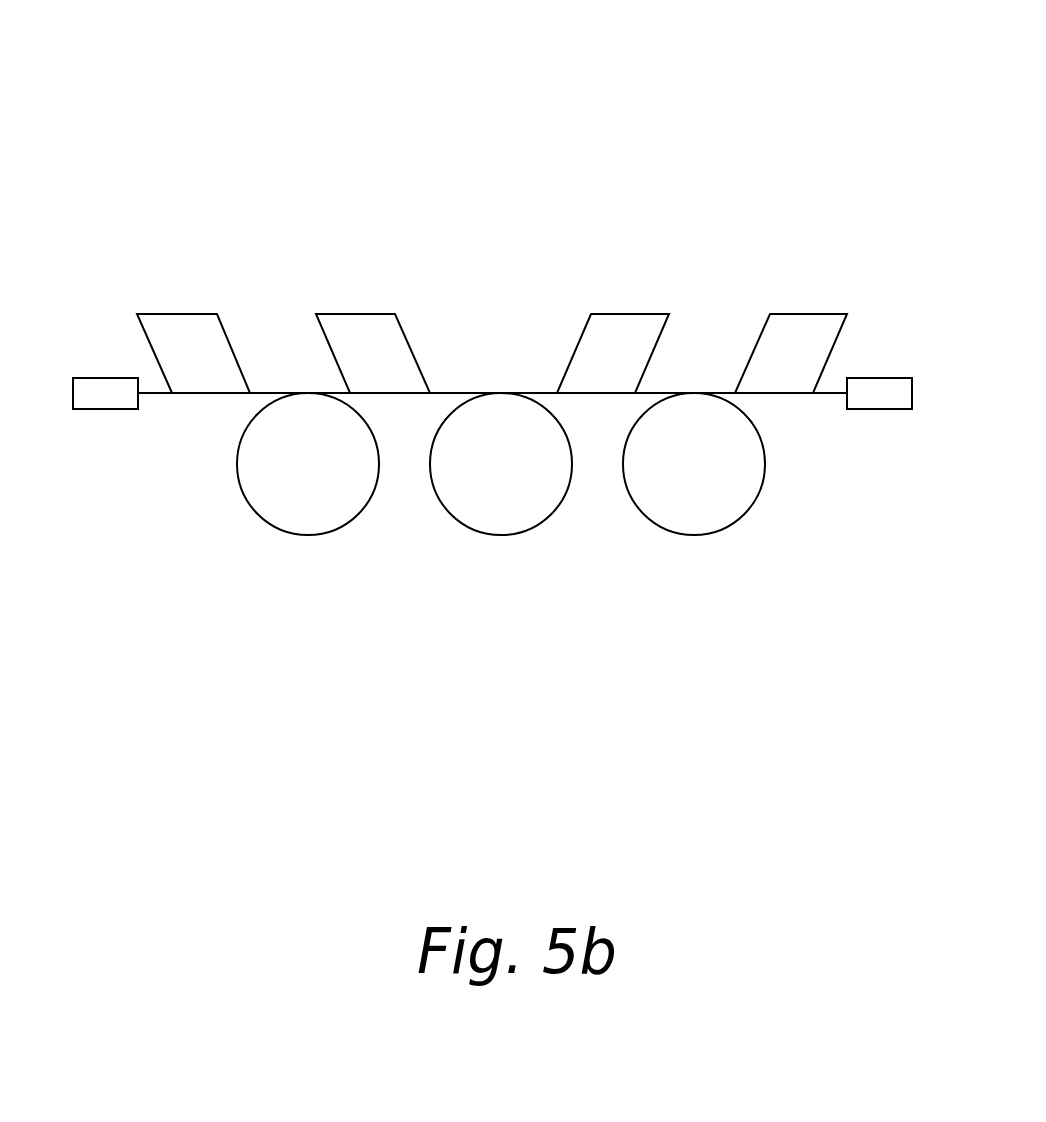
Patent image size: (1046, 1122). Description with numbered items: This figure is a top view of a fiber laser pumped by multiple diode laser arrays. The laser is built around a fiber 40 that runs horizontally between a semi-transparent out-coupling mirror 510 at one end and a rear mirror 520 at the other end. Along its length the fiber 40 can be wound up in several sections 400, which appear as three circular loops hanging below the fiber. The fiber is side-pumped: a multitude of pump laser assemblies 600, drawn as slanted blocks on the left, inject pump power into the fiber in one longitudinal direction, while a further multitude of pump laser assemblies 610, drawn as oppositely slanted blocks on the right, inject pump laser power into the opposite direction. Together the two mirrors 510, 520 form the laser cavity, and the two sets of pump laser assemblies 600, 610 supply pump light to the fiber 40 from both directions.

The fiber 40 is at (443, 393).
The sections 400 is at (477, 533).
The semi-transparent out-coupling mirror 510 is at (87, 388).
The rear mirror 520 is at (893, 380).
The pump laser assemblies 600 is at (193, 347).
The pump laser assemblies 610 is at (802, 352).